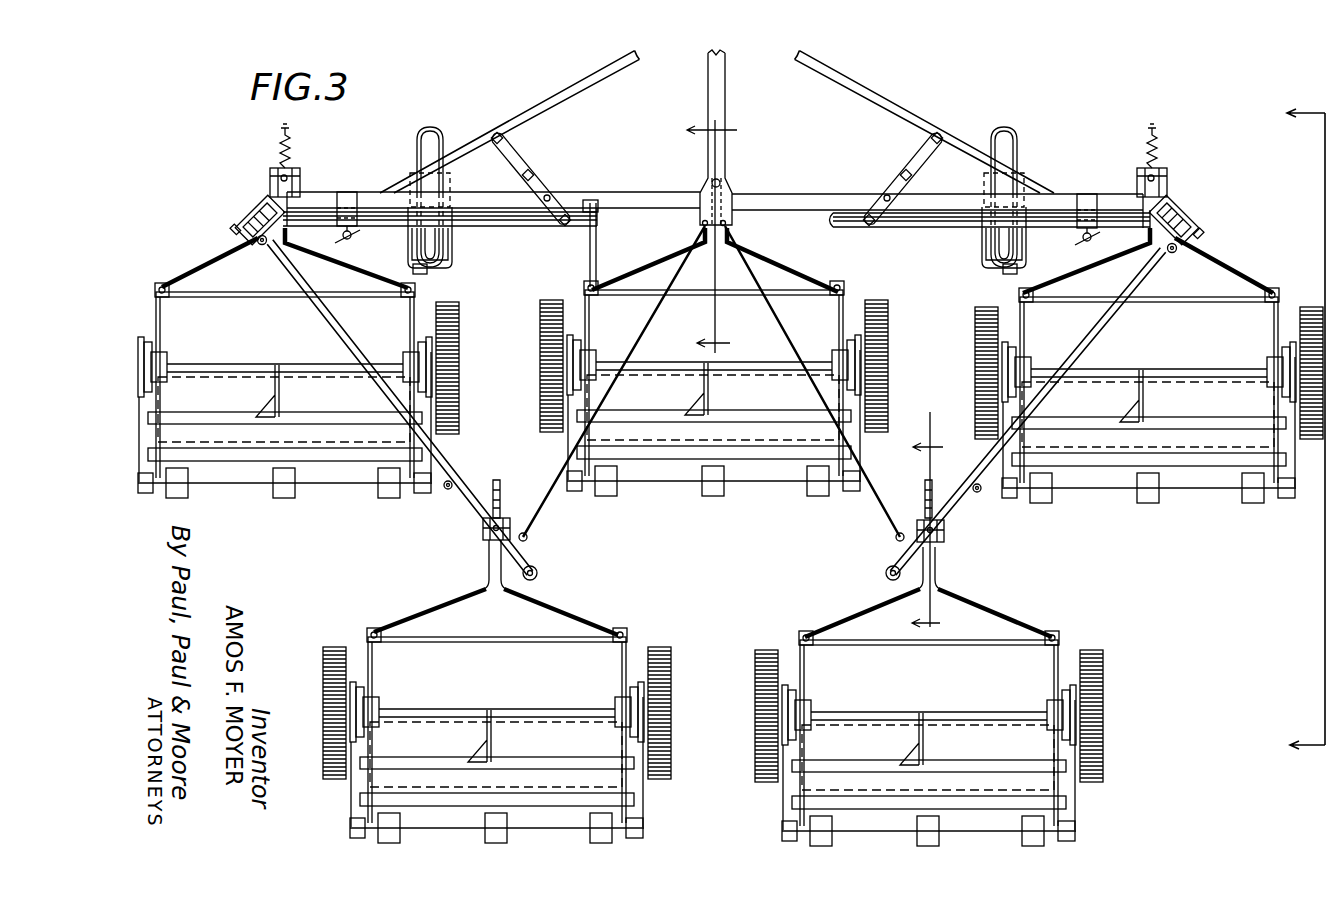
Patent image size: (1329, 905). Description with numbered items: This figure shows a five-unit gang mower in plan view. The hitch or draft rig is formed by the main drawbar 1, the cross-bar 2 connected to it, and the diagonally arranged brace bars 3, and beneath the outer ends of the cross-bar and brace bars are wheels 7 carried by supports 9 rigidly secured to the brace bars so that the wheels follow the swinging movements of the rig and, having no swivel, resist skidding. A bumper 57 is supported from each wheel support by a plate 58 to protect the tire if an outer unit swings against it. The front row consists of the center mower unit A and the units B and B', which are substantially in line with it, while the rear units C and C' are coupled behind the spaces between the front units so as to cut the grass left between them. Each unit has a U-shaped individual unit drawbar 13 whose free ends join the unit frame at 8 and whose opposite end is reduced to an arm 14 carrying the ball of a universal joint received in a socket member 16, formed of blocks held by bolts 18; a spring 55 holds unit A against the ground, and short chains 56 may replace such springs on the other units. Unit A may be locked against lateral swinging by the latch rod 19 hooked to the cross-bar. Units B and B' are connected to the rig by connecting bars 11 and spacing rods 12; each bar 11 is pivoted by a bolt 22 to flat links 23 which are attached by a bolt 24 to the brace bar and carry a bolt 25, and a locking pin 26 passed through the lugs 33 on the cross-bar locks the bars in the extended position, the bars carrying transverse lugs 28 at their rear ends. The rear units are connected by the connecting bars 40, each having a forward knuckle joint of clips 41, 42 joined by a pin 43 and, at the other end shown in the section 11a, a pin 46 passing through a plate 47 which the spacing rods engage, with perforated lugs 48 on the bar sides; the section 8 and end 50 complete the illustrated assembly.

The main drawbar 1 is at (725, 88).
The cross-bar 2 is at (785, 200).
The brace bars 3 is at (603, 78).
The wheels 7 is at (432, 125).
The unit frame connection 8 is at (1302, 427).
The wheel supports 9 is at (412, 175).
The connecting bars 11 is at (500, 222).
The section line 11a is at (944, 523).
The spacing rods 12 is at (645, 318).
The individual unit drawbar 13 is at (200, 265).
The arm 14 is at (488, 573).
The socket member 16 is at (259, 187).
The bolts 18 is at (701, 229).
The latch rod 19 is at (597, 243).
The bolt 22 is at (565, 228).
The flat links 23 is at (520, 158).
The bolt 24 is at (495, 137).
The bolt 25 is at (530, 173).
The locking pin 26 is at (352, 238).
The transverse lug 28 is at (278, 170).
The lugs 33 is at (348, 194).
The connecting bars 40 is at (350, 333).
The clip 41 is at (250, 232).
The clip 42 is at (256, 215).
The pin 43 is at (240, 230).
The pin 46 is at (488, 524).
The plate 47 is at (530, 538).
The perforated lugs 48 is at (446, 492).
The eye end 50 is at (540, 573).
The spring 55 is at (297, 143).
The short chains 56 is at (502, 494).
The bumper 57 is at (425, 272).
The plate 58 is at (452, 258).
The center mower unit A is at (714, 403).
The mower unit B is at (1149, 406).
The mower unit B' is at (298, 400).
The mower unit C is at (929, 738).
The mower unit C' is at (498, 735).